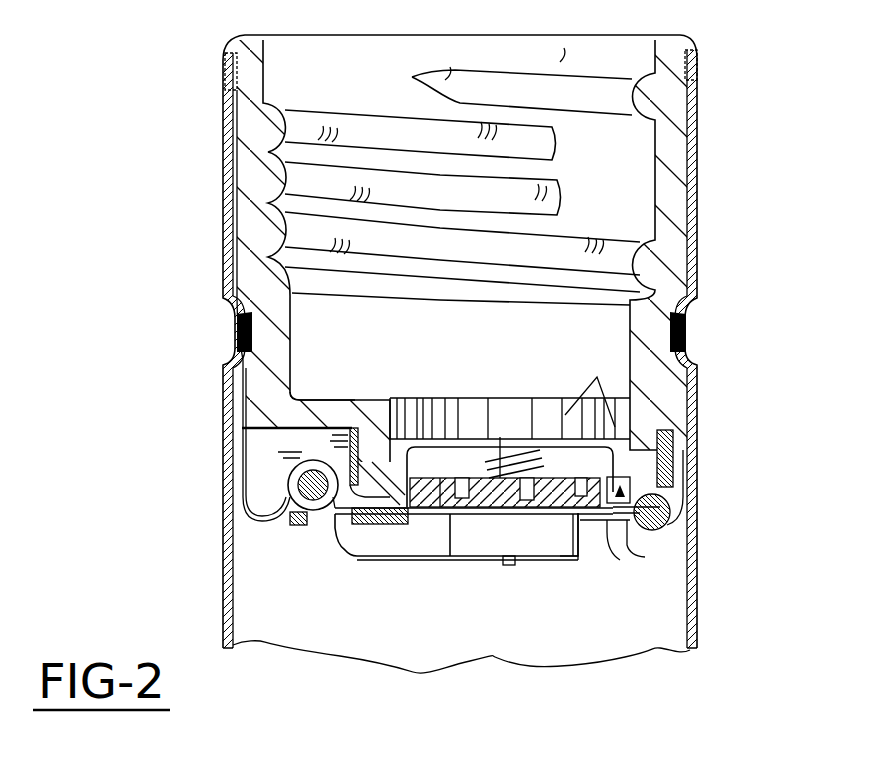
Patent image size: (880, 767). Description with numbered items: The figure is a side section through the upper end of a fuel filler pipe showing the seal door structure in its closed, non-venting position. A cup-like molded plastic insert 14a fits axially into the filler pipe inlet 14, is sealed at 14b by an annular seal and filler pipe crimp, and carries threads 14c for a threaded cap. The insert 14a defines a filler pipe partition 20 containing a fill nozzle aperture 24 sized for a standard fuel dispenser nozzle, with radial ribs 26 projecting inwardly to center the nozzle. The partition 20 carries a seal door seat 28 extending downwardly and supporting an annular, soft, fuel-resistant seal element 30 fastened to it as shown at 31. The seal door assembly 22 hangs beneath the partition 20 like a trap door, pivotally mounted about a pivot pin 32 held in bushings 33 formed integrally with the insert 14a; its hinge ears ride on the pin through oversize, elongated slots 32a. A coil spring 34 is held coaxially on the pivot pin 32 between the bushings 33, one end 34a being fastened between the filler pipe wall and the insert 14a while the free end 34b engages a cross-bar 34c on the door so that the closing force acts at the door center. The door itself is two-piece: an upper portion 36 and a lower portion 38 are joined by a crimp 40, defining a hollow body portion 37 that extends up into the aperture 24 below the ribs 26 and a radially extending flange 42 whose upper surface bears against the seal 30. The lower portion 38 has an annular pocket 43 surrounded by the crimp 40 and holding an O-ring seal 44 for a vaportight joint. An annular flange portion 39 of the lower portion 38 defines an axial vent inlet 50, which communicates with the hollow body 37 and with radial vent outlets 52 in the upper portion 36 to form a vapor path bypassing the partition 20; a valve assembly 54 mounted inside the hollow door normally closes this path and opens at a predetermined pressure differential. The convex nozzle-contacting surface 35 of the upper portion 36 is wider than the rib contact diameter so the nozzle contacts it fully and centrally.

The filler pipe inlet 14 is at (698, 106).
The cup-like insert 14a is at (676, 158).
The seal 14b is at (688, 325).
The threads 14c is at (286, 172).
The filler pipe partition 20 is at (340, 400).
The seal door assembly 22 is at (593, 573).
The fill nozzle aperture 24 is at (525, 425).
The radial ribs 26 is at (590, 387).
The seal door seat 28 is at (646, 465).
The seal element 30 is at (660, 490).
The crimp fastening 31 is at (675, 443).
The pivot pin 32 is at (290, 475).
The elongated slots 32a is at (310, 530).
The bushings 33 is at (318, 435).
The coil spring 34 is at (390, 560).
The spring end 34a is at (243, 420).
The free end 34b is at (530, 556).
The cross-bar 34c is at (510, 565).
The nozzle-contacting surface 35 is at (423, 467).
The upper portion 36 is at (370, 450).
The hollow body portion 37 is at (500, 437).
The lower portion 38 is at (363, 555).
The annular flange portion 39 is at (432, 547).
The crimp 40 is at (660, 528).
The flange 42 is at (603, 540).
The annular pocket 43 is at (627, 543).
The O-ring seal 44 is at (672, 515).
The axial vent inlet 50 is at (567, 557).
The radial vent outlets 52 is at (493, 465).
The valve assembly 54 is at (487, 527).